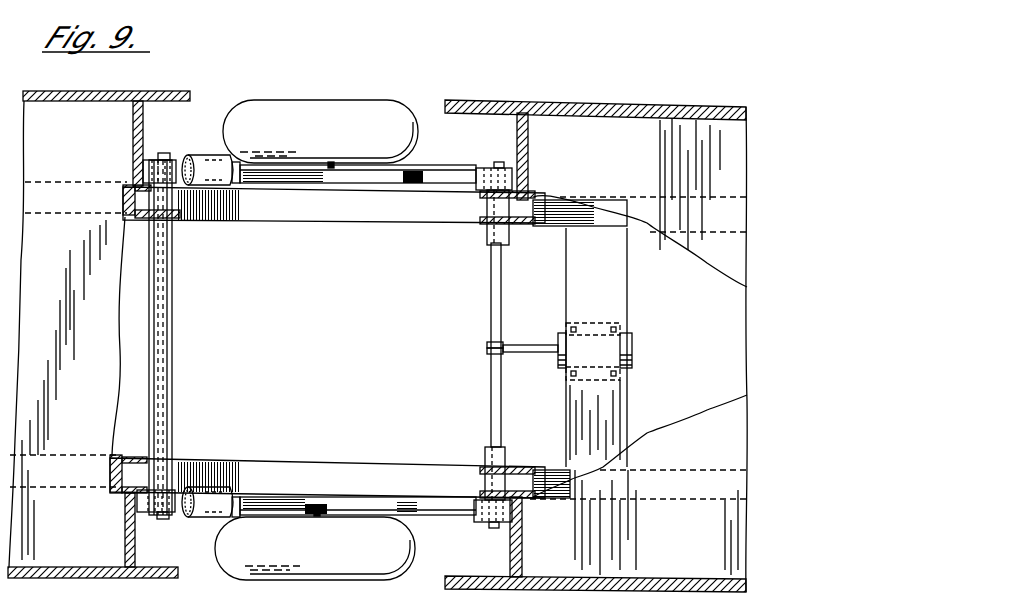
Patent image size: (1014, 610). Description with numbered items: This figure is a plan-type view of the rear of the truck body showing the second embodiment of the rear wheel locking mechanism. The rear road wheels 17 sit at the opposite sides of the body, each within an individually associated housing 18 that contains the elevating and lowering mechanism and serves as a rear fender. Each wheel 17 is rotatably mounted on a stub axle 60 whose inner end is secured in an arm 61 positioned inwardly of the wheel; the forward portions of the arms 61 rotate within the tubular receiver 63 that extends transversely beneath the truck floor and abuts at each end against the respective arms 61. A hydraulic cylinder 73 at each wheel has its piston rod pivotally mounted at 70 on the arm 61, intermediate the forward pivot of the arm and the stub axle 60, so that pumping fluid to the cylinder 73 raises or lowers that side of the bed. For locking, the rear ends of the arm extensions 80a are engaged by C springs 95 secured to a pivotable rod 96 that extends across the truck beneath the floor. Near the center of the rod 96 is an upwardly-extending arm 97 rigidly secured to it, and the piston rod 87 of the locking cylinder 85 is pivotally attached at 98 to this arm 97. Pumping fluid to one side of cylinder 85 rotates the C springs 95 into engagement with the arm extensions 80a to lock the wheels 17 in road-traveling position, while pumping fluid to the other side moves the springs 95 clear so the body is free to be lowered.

The rear road wheel 17 is at (357, 101).
The wheel housing 18 is at (528, 152).
The stub axle 60 is at (331, 168).
The arm 61 is at (178, 160).
The tubular receiver 63 is at (172, 382).
The piston rod pivot mounting 70 is at (243, 190).
The hydraulic cylinder 73 is at (210, 190).
The arm extension 80a is at (440, 172).
The locking cylinder 85 is at (628, 345).
The piston rod 87 is at (530, 343).
The C spring 95 is at (486, 168).
The pivotable rod 96 is at (500, 392).
The upwardly-extending arm 97 is at (490, 353).
The pivotal attachment 98 is at (492, 343).